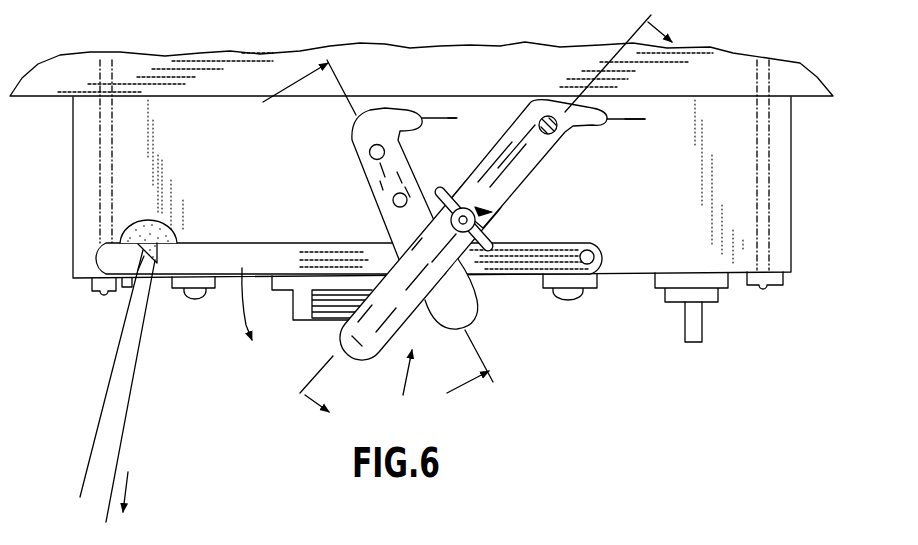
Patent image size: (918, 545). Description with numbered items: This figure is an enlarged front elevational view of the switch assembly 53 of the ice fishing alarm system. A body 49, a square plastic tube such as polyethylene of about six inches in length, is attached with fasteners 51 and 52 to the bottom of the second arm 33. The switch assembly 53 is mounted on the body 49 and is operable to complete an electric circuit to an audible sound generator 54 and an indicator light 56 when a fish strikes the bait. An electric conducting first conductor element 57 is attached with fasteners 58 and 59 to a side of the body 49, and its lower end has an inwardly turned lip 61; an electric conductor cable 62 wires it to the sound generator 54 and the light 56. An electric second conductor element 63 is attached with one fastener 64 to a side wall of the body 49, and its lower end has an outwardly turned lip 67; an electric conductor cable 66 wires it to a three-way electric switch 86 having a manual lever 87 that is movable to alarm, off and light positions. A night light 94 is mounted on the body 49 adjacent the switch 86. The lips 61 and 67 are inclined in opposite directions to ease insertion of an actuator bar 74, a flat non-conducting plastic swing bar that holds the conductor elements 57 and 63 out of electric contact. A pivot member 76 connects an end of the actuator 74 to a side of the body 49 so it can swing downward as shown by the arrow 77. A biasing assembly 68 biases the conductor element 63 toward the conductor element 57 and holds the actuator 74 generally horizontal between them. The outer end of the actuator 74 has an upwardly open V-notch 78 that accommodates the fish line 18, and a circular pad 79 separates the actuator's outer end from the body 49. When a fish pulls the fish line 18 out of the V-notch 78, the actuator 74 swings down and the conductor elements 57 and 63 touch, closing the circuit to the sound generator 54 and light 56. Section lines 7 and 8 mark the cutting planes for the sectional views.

The section line 7- 7 is at (368, 235).
The section line 8- 8 is at (493, 220).
The fish line 18 is at (123, 427).
The second arm 33 is at (725, 68).
The body 49 is at (82, 180).
The fastener 51 is at (98, 291).
The fastener 52 is at (767, 285).
The switch assembly 53 is at (405, 386).
The audible sound generator 54 is at (292, 317).
The indicator light 56 is at (193, 300).
The first conductor element 57 is at (402, 172).
The fastener 58 is at (370, 158).
The fastener 59 is at (393, 203).
The inwardly turned lip 61 is at (460, 306).
The electric conductor cable 62 is at (452, 117).
The second conductor element 63 is at (527, 165).
The fastener 64 is at (557, 132).
The electric conductor cable 66 is at (627, 121).
The outwardly turned lip 67 is at (357, 330).
The biasing assembly 68 is at (475, 212).
The actuator bar 74 is at (212, 253).
The pivot member 76 is at (594, 263).
The arrow 77 is at (240, 318).
The V-notch 78 is at (138, 270).
The circular pad 79 is at (148, 221).
The three-way electric switch 86 is at (722, 277).
The manual lever 87 is at (700, 342).
The night light 94 is at (570, 300).